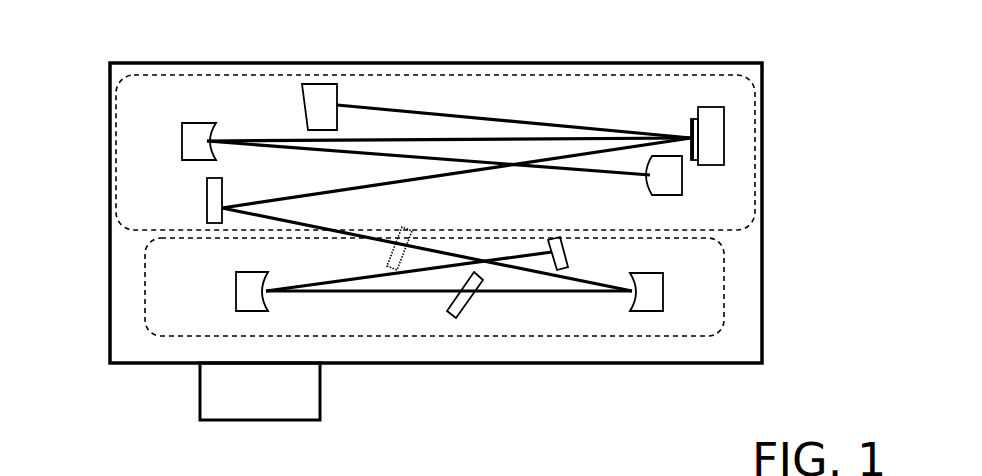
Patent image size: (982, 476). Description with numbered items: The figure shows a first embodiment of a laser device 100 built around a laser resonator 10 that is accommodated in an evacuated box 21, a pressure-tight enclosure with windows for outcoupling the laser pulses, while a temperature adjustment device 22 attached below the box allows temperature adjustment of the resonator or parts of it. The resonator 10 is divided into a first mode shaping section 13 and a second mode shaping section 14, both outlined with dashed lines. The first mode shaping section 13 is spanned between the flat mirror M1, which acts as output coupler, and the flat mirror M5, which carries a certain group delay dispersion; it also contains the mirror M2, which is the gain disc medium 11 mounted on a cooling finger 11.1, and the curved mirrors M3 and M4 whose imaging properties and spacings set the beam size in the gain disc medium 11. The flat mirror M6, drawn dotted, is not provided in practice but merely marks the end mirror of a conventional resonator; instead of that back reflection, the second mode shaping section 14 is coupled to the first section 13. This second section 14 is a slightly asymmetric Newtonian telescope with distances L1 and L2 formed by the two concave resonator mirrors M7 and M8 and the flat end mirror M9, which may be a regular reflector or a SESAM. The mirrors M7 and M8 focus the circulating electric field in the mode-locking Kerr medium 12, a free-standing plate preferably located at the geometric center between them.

The laser device 100 is at (138, 52).
The evacuated box 21 is at (382, 62).
The first mode shaping section 13 is at (750, 98).
The second mode shaping section 14 is at (718, 330).
The laser resonator 10 is at (330, 190).
The gain disc medium 11 is at (712, 160).
The cooling finger 11.1 is at (700, 137).
The mode-locking Kerr medium 12 is at (472, 300).
The temperature adjustment device 22 is at (203, 402).
The flat mirror M1 is at (299, 107).
The mirror M2 is at (689, 130).
The curved mirror M3 is at (182, 141).
The curved mirror M4 is at (664, 187).
The flat mirror M5 is at (194, 200).
The flat mirror M6 is at (384, 249).
The concave resonator mirror M7 is at (665, 292).
The concave resonator mirror M8 is at (233, 291).
The flat end mirror M9 is at (576, 253).
The telescope distance L1 is at (414, 262).
The telescope distance L2 is at (464, 254).